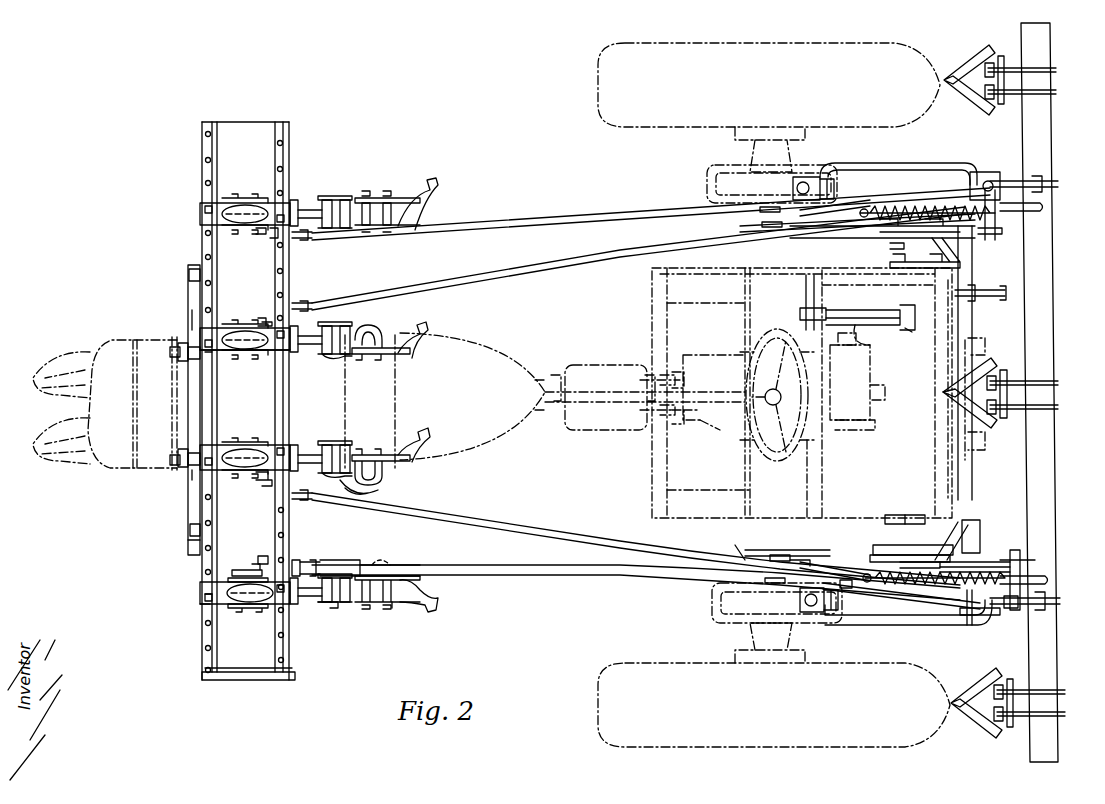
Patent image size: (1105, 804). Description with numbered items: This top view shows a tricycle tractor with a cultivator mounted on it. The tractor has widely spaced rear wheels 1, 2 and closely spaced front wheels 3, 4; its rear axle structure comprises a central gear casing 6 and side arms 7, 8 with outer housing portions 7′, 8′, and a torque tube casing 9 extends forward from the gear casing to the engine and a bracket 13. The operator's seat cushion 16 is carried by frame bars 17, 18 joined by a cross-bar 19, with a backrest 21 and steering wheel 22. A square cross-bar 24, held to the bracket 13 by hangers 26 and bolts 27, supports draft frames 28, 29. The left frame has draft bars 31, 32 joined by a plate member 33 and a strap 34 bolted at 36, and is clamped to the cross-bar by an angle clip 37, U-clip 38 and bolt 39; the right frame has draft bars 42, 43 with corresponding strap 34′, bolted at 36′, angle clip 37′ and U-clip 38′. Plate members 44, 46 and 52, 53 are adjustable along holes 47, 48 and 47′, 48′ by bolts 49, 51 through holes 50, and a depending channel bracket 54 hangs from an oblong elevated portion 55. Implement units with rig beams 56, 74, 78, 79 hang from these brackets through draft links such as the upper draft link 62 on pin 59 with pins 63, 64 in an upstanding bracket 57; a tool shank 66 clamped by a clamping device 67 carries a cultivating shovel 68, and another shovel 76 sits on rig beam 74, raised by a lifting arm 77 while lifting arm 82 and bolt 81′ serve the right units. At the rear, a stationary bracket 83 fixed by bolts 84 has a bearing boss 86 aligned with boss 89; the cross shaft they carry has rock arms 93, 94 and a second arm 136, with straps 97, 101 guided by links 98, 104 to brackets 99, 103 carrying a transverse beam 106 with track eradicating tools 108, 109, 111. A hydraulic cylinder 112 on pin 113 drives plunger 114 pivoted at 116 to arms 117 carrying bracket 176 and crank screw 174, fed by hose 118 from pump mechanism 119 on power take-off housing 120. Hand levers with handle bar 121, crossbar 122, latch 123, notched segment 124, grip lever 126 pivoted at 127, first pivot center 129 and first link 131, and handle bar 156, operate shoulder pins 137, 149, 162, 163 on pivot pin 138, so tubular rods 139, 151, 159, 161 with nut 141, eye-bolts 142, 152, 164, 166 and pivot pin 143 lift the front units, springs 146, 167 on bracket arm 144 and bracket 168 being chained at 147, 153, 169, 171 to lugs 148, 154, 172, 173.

The rear wheel 1 is at (680, 752).
The rear wheel 2 is at (660, 120).
The front wheel 3 is at (66, 450).
The front wheel 4 is at (76, 348).
The central gear casing 6 is at (705, 358).
The side arm 7 is at (748, 464).
The outer housing portion 7′ is at (714, 615).
The side arm 8 is at (745, 316).
The outer housing portion 8′ is at (708, 178).
The torque tube casing 9 is at (505, 386).
The bracket 13 is at (172, 376).
The seat cushion 16 is at (885, 474).
The frame bar 17 is at (694, 487).
The frame bar 18 is at (692, 302).
The cross-bar 19 is at (652, 460).
The backrest 21 is at (978, 360).
The steering wheel 22 is at (750, 372).
The square cross-bar 24 is at (188, 291).
The hanger 26 is at (186, 342).
The bolt 27 is at (172, 354).
The draft frame 28 is at (204, 664).
The draft frame 29 is at (204, 154).
The draft bar 31 is at (214, 519).
The draft bar 32 is at (280, 519).
The plate member 33 is at (252, 678).
The strap 34 is at (314, 448).
The strap 34′ is at (306, 356).
The bolted connection 36 is at (360, 450).
The bolted connection 36′ is at (362, 355).
The angle clip 37 is at (194, 540).
The angle clip 37′ is at (191, 268).
The U-clip 38 is at (190, 478).
The U-clip 38′ is at (192, 318).
The bolt 39 is at (190, 530).
The draft bar 42 is at (226, 150).
The draft bar 43 is at (292, 152).
The plate member 44 is at (203, 576).
The plate member 46 is at (232, 478).
The holes 47 is at (205, 633).
The holes 47′ is at (205, 178).
The holes 48 is at (285, 655).
The holes 48′ is at (284, 178).
The bolt 49 is at (204, 600).
The hole 50 is at (204, 588).
The bolt 51 is at (298, 562).
The plate member 52 is at (200, 216).
The plate member 53 is at (212, 352).
The channel shaped bracket 54 is at (246, 606).
The oblong elevated portion 55 is at (258, 205).
The rig beam 56 is at (438, 598).
The upstanding channel shaped bracket 57 is at (340, 600).
The pin 59 is at (254, 566).
The upper draft link 62 is at (304, 598).
The pin 63 is at (334, 608).
The pin 64 is at (260, 614).
The tool shank 66 is at (385, 575).
The clamping device 67 is at (398, 608).
The cultivating shovel 68 is at (356, 558).
The rig beam 74 is at (438, 452).
The cultivating shovel 76 is at (376, 492).
The lifting arm 77 is at (262, 485).
The rig beam 78 is at (418, 206).
The rig beam 79 is at (418, 340).
The bolt 81′ is at (256, 232).
The lifting arm 82 is at (258, 320).
The stationary bracket 83 is at (918, 516).
The bolt 84 is at (890, 512).
The bearing boss 86 is at (978, 528).
The bearing boss 89 is at (972, 258).
The rock arm 93 is at (1060, 602).
The rock arm 94 is at (1058, 186).
The bent strap 97 is at (1017, 608).
The link 98 is at (902, 620).
The bracket 99 is at (810, 612).
The strap 101 is at (1000, 172).
The bracket 103 is at (815, 172).
The link 104 is at (905, 166).
The transverse beam 106 is at (1046, 260).
The track eradicating tool 108 is at (992, 730).
The track eradicating tool 109 is at (984, 62).
The track eradicating tool 111 is at (988, 420).
The hydraulic cylinder 112 is at (855, 312).
The pin 113 is at (806, 287).
The plunger 114 is at (902, 312).
The pivotal connection 116 is at (910, 332).
The arm 117 is at (905, 325).
The hose 118 is at (868, 336).
The pump mechanism 119 is at (848, 360).
The power take-off housing 120 is at (845, 422).
The handle bar 121 is at (768, 548).
The crossbar 122 is at (938, 530).
The latch 123 is at (870, 552).
The notched segment 124 is at (880, 546).
The grip lever 126 is at (745, 552).
The pivot 127 is at (792, 558).
The first pivot center 129 is at (940, 588).
The first link 131 is at (978, 556).
The second arm 136 is at (1035, 562).
The shoulder pin 137 is at (968, 626).
The pivot pin 138 is at (990, 620).
The tubular rod 139 is at (625, 574).
The nut 141 is at (352, 556).
The eye-bolt 142 is at (314, 560).
The pivot pin 143 is at (266, 556).
The bracket arm 144 is at (1042, 580).
The coil spring 146 is at (890, 588).
The chain connection 147 is at (850, 582).
The lug 148 is at (778, 584).
The shoulder pin 149 is at (1005, 572).
The second tubular rod 151 is at (630, 553).
The eye-bolt 152 is at (306, 500).
The chain connection 153 is at (833, 562).
The lug 154 is at (780, 546).
The handle bar 156 is at (852, 240).
The tubular rod 159 is at (548, 228).
The tubular rod 161 is at (532, 262).
The shoulder pin 162 is at (992, 168).
The shoulder pin 163 is at (985, 226).
The eye-bolt 164 is at (306, 241).
The eye-bolt 166 is at (302, 306).
The spring 167 is at (905, 200).
The bracket 168 is at (1045, 207).
The chain 169 is at (835, 205).
The chain 171 is at (825, 228).
The lug 172 is at (770, 206).
The lug 173 is at (768, 232).
The crank screw 174 is at (1002, 286).
The bracket 176 is at (973, 288).